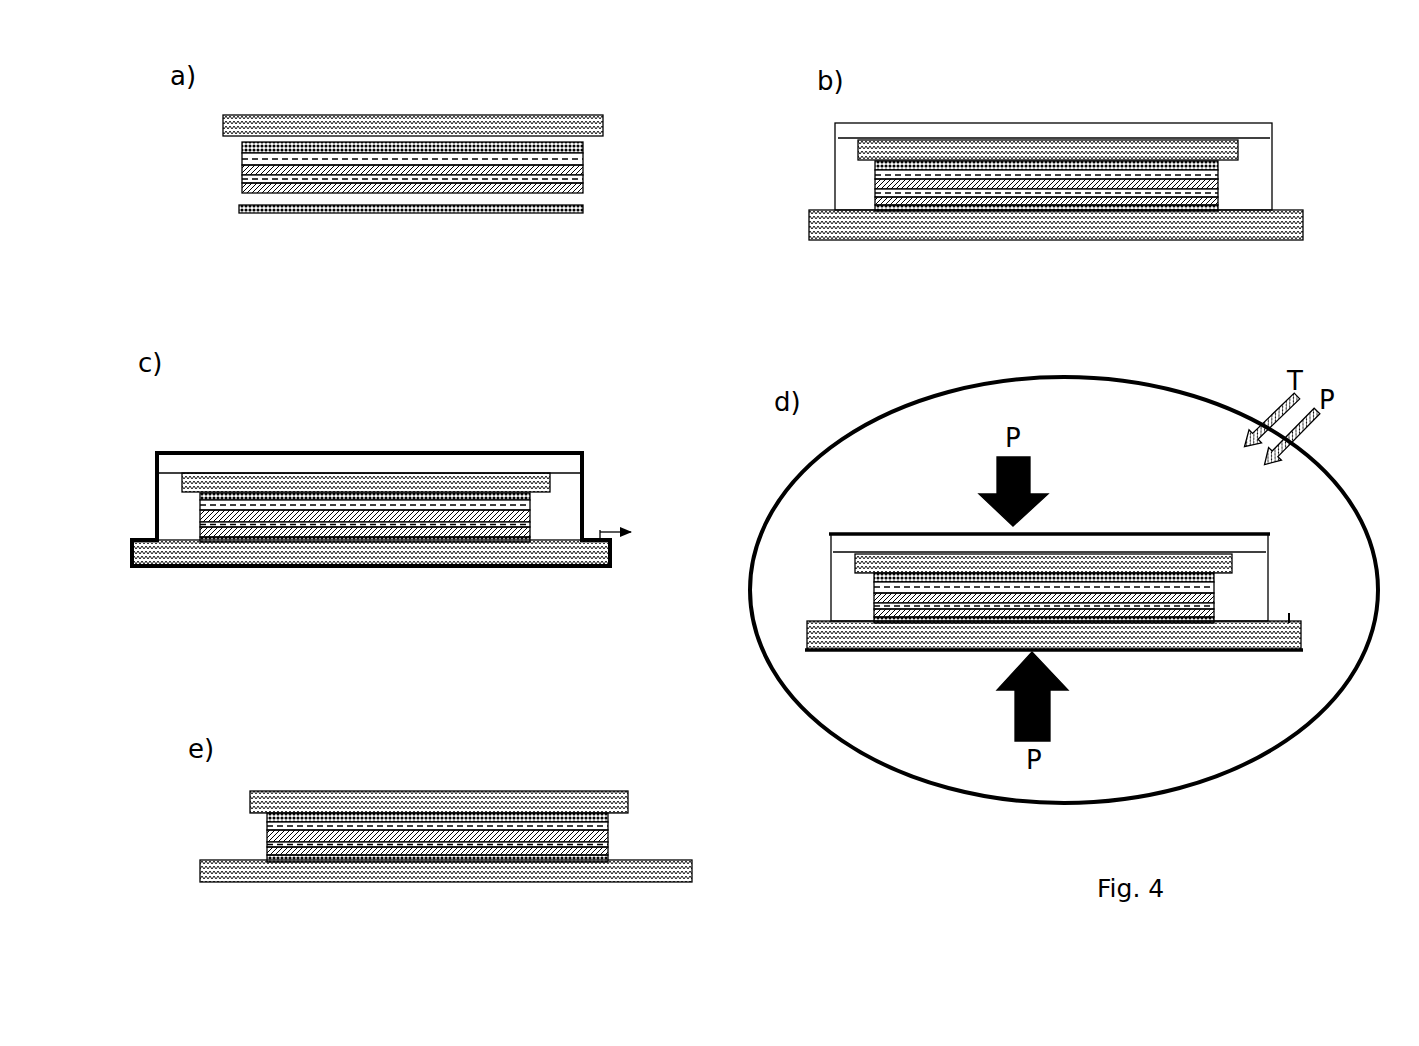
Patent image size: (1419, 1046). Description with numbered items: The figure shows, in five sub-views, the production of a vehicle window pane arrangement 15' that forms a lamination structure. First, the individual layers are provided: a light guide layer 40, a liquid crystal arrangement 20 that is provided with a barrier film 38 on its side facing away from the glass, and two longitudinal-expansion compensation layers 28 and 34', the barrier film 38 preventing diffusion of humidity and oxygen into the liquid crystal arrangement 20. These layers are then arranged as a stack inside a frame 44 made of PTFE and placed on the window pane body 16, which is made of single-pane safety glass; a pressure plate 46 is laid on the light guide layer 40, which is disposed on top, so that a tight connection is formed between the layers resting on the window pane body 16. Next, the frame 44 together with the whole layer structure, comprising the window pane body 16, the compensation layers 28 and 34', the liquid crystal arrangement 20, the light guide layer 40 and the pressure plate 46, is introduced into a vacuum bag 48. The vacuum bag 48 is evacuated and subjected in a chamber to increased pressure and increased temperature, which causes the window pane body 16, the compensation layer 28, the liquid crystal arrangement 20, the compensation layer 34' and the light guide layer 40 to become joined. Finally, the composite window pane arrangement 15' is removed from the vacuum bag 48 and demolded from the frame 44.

The window pane arrangement 15' is at (446, 784).
The window pane body 16 is at (1085, 228).
The liquid crystal arrangement 20 is at (587, 183).
The longitudinal-expansion compensation layer 28 is at (535, 214).
The longitudinal-expansion compensation layer 34' is at (709, 432).
The barrier film 38 is at (585, 162).
The light guide layer 40 is at (265, 115).
The frame 44 is at (1252, 158).
The pressure plate 46 is at (1205, 135).
The vacuum bag 48 is at (283, 452).